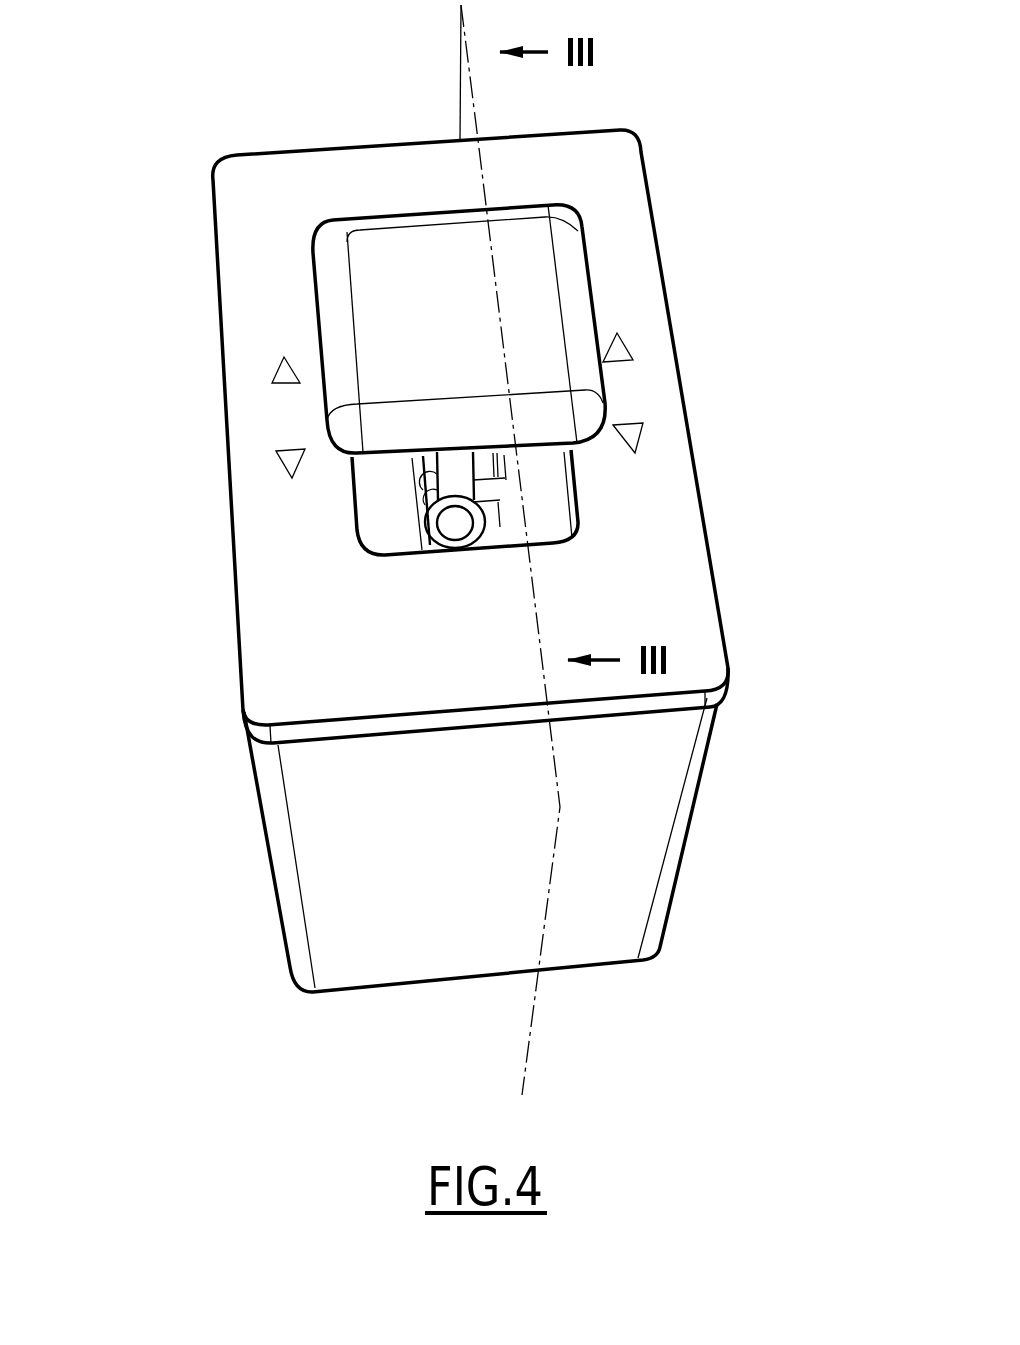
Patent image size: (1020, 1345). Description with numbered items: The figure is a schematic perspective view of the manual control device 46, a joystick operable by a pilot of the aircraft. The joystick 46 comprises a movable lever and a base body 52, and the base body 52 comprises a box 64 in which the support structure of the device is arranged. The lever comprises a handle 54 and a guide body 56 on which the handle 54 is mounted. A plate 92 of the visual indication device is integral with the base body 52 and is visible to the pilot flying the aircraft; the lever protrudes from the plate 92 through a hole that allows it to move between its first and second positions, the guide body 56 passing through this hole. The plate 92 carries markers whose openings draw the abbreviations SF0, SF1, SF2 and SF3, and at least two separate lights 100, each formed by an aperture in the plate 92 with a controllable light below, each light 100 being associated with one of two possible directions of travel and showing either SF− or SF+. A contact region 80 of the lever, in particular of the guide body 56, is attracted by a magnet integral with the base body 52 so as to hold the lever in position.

The manual control device 46 is at (461, 550).
The base body 52 is at (487, 406).
The handle 54 is at (396, 271).
The guide body 56 is at (453, 498).
The box 64 is at (731, 572).
The contact region 80 is at (371, 171).
The plate 92 is at (667, 252).
The light 100 is at (268, 375).